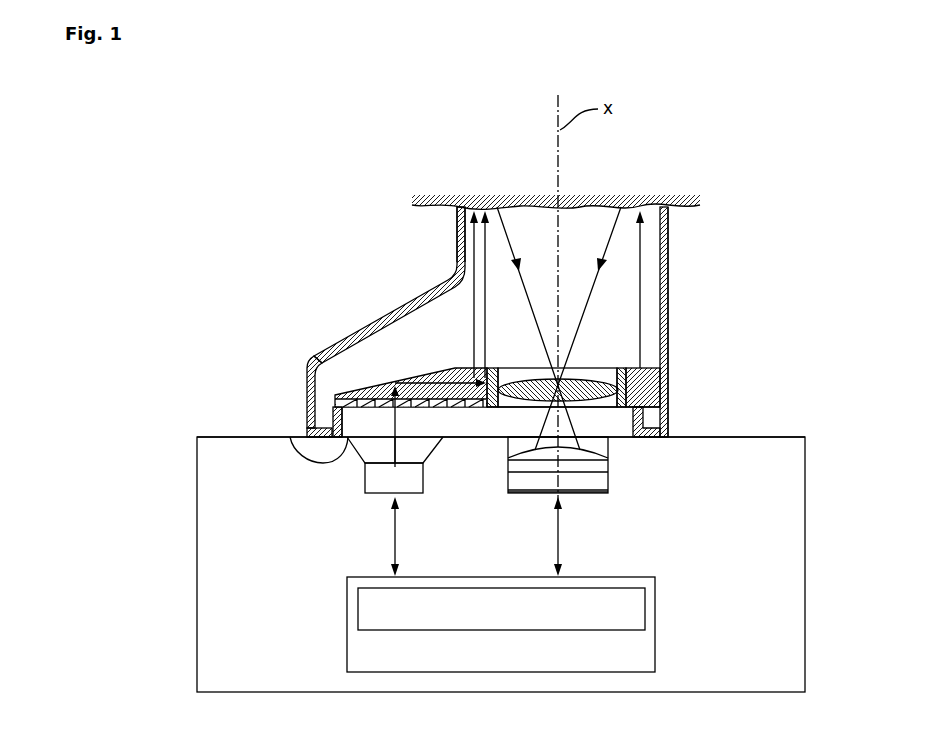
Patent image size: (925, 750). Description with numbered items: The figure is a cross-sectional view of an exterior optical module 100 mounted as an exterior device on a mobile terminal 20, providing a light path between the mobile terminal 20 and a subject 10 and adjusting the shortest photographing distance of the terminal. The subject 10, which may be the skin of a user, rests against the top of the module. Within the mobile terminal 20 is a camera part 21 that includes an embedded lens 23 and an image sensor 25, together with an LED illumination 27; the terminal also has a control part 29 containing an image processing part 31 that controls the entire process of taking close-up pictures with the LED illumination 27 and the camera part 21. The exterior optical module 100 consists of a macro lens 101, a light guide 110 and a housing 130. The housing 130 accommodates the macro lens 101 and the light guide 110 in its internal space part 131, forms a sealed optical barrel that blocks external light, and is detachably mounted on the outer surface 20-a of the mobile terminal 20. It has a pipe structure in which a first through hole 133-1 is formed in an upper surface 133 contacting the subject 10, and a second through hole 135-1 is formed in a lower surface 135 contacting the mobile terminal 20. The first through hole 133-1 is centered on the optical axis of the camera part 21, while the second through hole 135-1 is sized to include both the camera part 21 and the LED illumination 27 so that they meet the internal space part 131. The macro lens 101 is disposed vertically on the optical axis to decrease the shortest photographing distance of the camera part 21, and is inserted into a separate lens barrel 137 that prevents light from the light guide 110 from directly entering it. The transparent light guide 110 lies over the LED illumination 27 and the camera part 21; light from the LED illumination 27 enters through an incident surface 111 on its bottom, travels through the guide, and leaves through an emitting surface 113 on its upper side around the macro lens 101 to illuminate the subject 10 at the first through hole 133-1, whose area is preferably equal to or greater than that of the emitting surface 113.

The subject 10 is at (418, 210).
The mobile terminal 20 is at (806, 620).
The outer surface of the mobile terminal 20-a is at (232, 437).
The camera part 21 is at (622, 470).
The embedded lens 23 is at (596, 449).
The image sensor 25 is at (598, 486).
The LED illumination 27 is at (367, 480).
The control part 29 is at (656, 645).
The image processing part 31 is at (655, 605).
The exterior optical module 100 is at (684, 350).
The macro lens 101 is at (512, 402).
The light guide 110 is at (648, 392).
The incident surface 111 is at (375, 388).
The emitting surface 113 is at (465, 367).
The housing 130 is at (347, 330).
The internal space part 131 is at (310, 365).
The upper surface 133 is at (668, 207).
The first through hole 133-1 is at (465, 207).
The lower surface 135 is at (305, 432).
The second through hole 135-1 is at (297, 432).
The lens barrel 137 is at (668, 413).